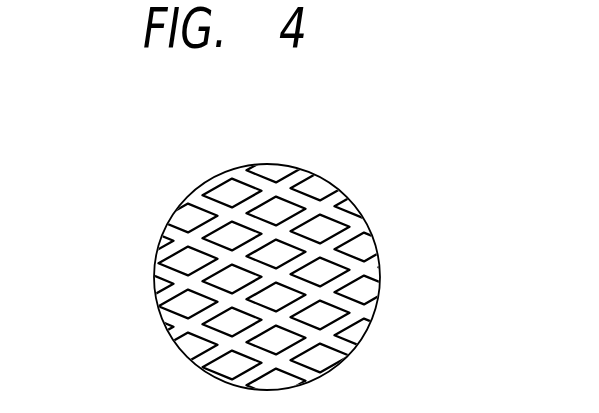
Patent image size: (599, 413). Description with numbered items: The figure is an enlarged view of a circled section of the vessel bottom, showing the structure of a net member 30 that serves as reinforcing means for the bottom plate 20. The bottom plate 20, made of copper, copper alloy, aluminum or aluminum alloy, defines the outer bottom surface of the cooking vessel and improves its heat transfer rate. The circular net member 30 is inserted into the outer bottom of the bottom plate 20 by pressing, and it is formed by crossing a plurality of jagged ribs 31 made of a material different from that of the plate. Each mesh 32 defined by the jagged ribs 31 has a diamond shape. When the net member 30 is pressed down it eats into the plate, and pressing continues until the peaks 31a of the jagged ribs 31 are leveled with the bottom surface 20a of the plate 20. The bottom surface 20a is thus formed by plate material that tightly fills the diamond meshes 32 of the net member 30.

The bottom plate 20 is at (170, 257).
The bottom surface of the plate 20a is at (326, 360).
The net member 30 is at (183, 208).
The jagged rib 31 is at (288, 193).
The peak of the jagged rib 31a is at (363, 314).
The mesh 32 is at (350, 212).